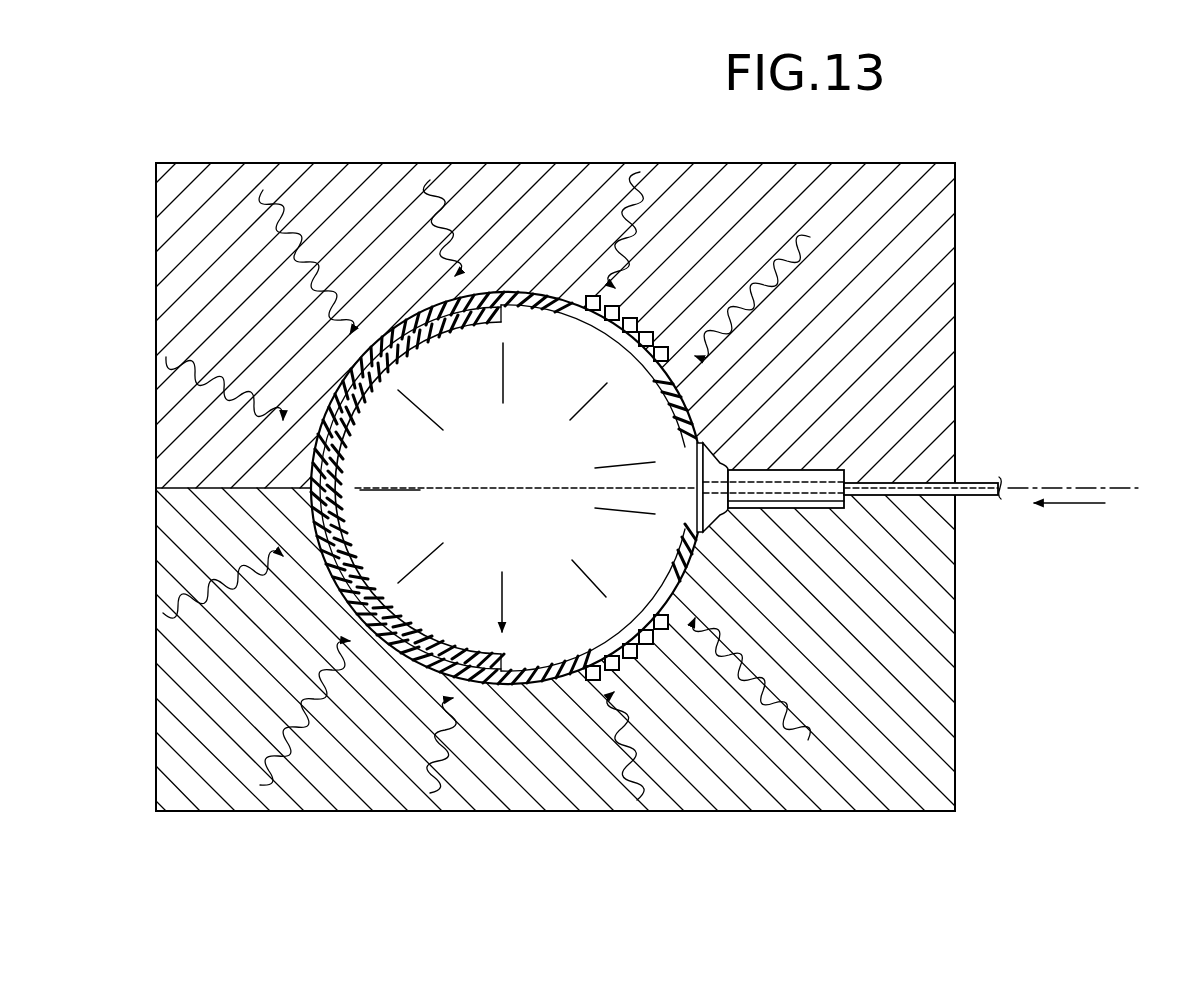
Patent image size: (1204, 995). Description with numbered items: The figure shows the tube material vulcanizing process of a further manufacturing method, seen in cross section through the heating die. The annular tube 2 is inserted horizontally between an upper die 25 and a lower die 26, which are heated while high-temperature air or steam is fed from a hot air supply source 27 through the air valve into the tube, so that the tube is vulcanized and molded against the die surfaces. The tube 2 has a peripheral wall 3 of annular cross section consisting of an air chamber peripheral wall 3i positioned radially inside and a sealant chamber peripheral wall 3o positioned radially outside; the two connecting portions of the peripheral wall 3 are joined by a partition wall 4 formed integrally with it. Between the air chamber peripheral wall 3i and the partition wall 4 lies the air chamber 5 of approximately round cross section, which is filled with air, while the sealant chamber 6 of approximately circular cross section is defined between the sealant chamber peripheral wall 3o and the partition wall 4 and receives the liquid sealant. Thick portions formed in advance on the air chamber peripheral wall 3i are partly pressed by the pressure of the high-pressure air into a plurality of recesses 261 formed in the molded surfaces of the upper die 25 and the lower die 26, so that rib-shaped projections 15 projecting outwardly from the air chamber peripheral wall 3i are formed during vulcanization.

The tube 2 is at (550, 293).
The peripheral wall 3 is at (503, 597).
The sealant chamber peripheral wall 3o is at (460, 678).
The air chamber peripheral wall 3i is at (558, 678).
The partition wall 4 is at (351, 538).
The air chamber 5 is at (518, 483).
The sealant chamber 6 is at (358, 404).
The rib-shaped projection 15 is at (668, 364).
The upper die 25 is at (957, 280).
The lower die 26 is at (957, 634).
The recess 261 is at (618, 296).
The hot air supply source 27 is at (1188, 507).